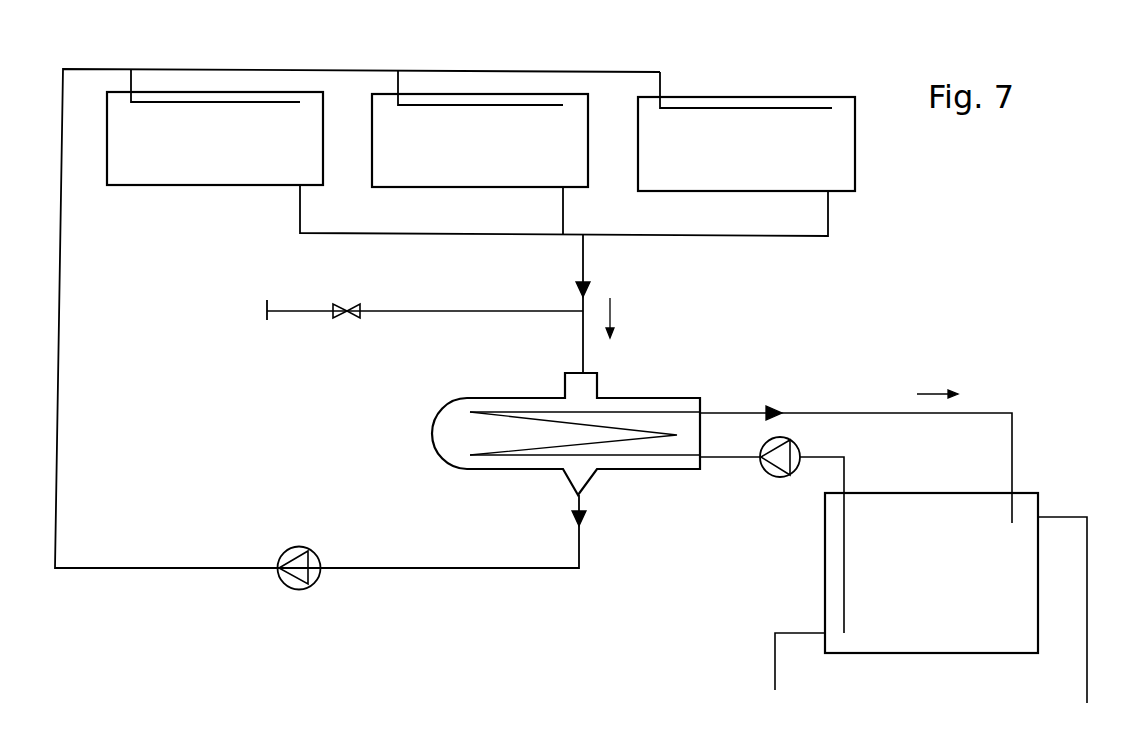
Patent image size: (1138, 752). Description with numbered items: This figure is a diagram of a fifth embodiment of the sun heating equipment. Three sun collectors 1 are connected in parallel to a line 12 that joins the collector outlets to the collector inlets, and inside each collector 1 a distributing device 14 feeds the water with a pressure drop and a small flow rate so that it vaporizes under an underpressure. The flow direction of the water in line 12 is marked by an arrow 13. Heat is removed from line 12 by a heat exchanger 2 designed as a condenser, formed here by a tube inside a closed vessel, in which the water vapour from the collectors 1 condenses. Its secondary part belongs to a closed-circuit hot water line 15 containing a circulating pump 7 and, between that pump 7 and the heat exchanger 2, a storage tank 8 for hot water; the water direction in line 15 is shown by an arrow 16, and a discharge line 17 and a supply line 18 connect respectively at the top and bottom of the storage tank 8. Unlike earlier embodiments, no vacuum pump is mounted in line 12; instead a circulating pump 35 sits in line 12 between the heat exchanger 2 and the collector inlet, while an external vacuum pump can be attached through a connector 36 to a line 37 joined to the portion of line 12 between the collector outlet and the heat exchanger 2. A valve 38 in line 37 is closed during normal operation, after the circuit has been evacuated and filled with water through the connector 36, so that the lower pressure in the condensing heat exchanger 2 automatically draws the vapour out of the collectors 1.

The sun collector 1 is at (210, 175).
The heat exchanger 2 is at (628, 397).
The circulating pump 7 is at (775, 478).
The storage tank 8 is at (942, 648).
The line 12 is at (62, 210).
The arrow 13 is at (624, 318).
The distributing device 14 is at (248, 102).
The hot water line 15 is at (828, 411).
The arrow 16 is at (937, 383).
The discharge line 17 is at (1087, 682).
The supply line 18 is at (773, 670).
The circulating pump 35 is at (316, 578).
The connector 36 is at (263, 315).
The line 37 is at (448, 310).
The valve 38 is at (342, 306).